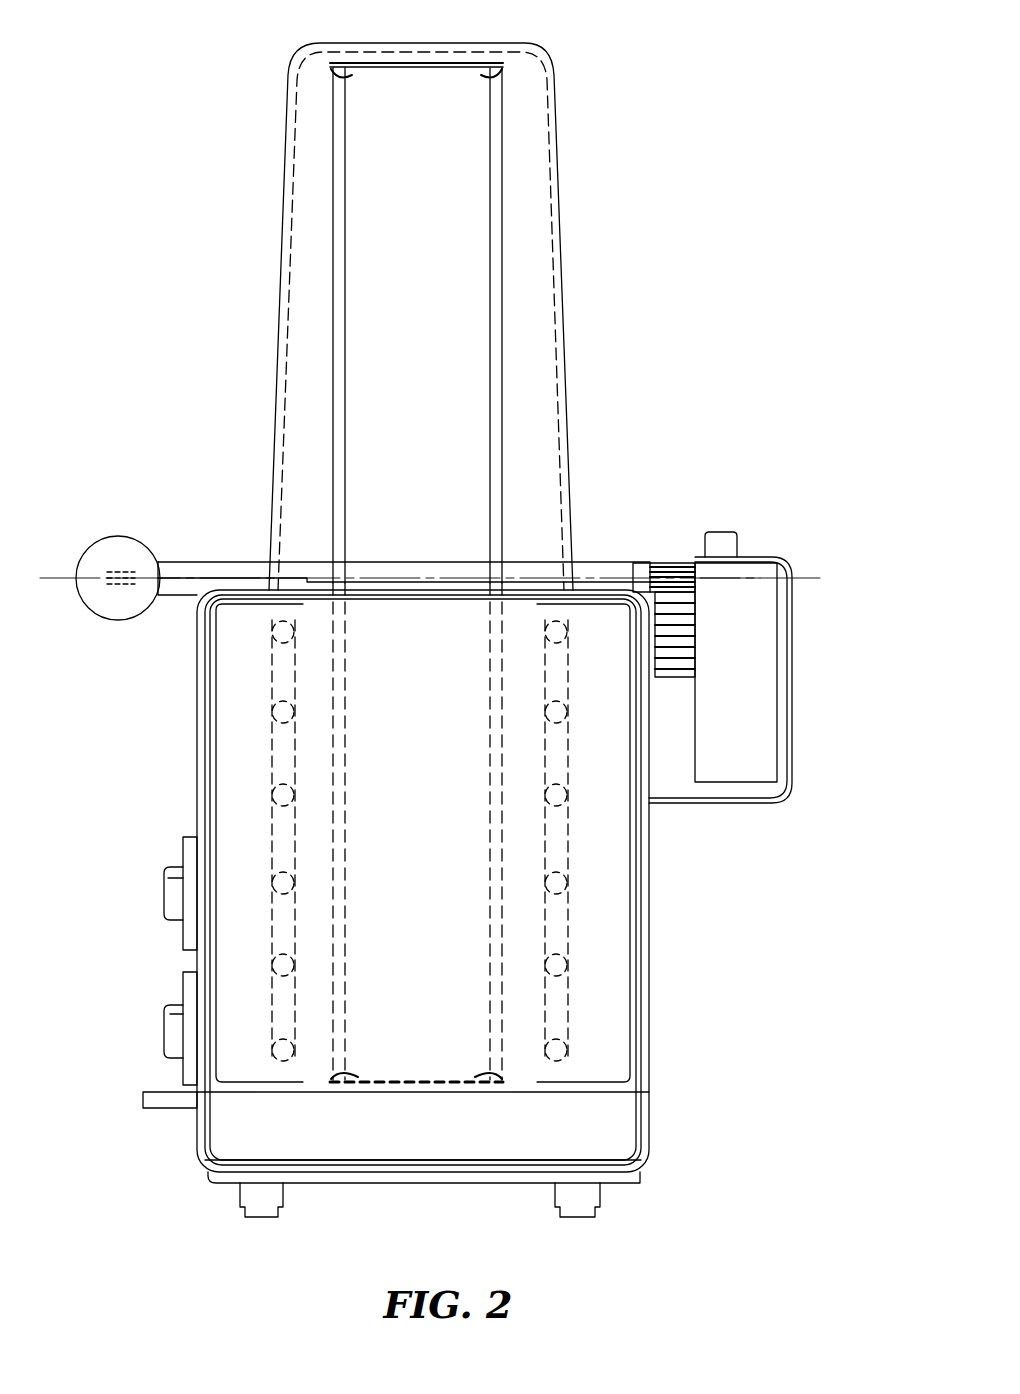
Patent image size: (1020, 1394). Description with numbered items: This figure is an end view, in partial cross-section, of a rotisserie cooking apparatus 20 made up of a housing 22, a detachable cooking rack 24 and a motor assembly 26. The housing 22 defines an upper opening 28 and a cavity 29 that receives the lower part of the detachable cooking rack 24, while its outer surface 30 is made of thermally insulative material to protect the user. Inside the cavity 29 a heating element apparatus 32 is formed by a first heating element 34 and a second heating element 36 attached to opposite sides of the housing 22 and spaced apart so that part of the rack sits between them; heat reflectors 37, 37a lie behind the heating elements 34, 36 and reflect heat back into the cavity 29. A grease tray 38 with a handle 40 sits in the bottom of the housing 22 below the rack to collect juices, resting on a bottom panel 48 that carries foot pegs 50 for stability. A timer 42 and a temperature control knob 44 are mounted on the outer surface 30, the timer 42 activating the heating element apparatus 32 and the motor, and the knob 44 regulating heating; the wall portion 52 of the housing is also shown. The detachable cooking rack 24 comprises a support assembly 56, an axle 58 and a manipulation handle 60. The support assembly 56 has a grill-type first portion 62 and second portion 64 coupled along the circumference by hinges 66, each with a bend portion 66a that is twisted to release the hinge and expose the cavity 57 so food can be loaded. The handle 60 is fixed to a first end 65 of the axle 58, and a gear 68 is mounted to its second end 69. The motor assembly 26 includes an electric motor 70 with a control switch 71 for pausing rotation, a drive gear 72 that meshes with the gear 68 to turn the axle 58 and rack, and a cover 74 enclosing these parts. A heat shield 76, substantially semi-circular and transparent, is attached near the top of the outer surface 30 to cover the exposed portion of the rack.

The rotisserie cooking apparatus 20 is at (828, 410).
The housing 22 is at (399, 866).
The detachable cooking rack 24 is at (390, 316).
The motor assembly 26 is at (735, 639).
The upper opening 28 is at (527, 583).
The cavity 29 is at (415, 620).
The outer surface 30 is at (205, 815).
The heating element apparatus 32 is at (420, 841).
The first heating element 34 is at (295, 800).
The second heating element 36 is at (545, 800).
The heat reflector 37 is at (218, 712).
The heat reflector 37a is at (630, 920).
The grease tray 38 is at (205, 1140).
The handle 40 is at (148, 1100).
The timer 42 is at (185, 1015).
The temperature control knob 44 is at (185, 850).
The bottom panel 48 is at (637, 1178).
The foot pegs 50 is at (278, 1195).
The housing wall 52 is at (640, 990).
The support assembly 56 is at (505, 210).
The cavity 57 is at (362, 227).
The axle 58 is at (401, 565).
The manipulation handle 60 is at (80, 556).
The first portion 62 is at (286, 542).
The second portion 64 is at (551, 542).
The first end 65 is at (186, 592).
The hinges 66 is at (416, 541).
The bend portion 66a is at (483, 73).
The gear 68 is at (668, 562).
The second end 69 is at (637, 572).
The electric motor 70 is at (770, 758).
The control switch 71 is at (720, 532).
The drive gear 72 is at (677, 682).
The cover 74 is at (790, 718).
The heat shield 76 is at (283, 162).